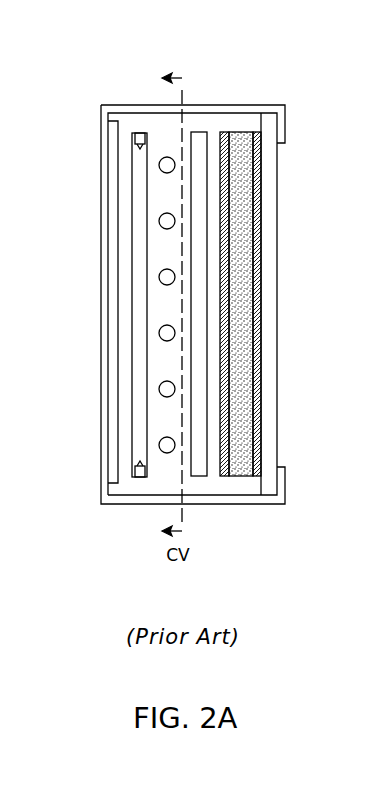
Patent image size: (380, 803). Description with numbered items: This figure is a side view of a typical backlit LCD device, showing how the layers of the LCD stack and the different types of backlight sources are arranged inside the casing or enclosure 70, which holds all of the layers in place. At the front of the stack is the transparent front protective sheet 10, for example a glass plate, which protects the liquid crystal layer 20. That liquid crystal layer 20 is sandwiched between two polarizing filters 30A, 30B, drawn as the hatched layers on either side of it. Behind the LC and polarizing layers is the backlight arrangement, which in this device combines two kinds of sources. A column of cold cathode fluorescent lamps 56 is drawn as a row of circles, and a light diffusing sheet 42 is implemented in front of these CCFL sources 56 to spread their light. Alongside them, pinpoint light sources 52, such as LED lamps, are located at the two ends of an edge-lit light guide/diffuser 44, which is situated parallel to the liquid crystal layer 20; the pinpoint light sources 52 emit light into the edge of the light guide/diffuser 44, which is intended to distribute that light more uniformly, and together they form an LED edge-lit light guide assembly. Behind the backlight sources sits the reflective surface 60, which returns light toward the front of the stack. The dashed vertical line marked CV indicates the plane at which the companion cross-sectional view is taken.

The transparent front protective sheet 10 is at (277, 303).
The liquid crystal layer 20 is at (243, 433).
The polarizing filter 30A is at (262, 211).
The polarizing filter 30B is at (223, 132).
The light diffusing sheet 42 is at (198, 143).
The edge-lit light guide/diffuser 44 is at (137, 230).
The pinpoint light sources 52 is at (135, 134).
The cold cathode fluorescent lamps 56 is at (164, 158).
The reflective surface 60 is at (113, 465).
The casing or enclosure 70 is at (101, 411).